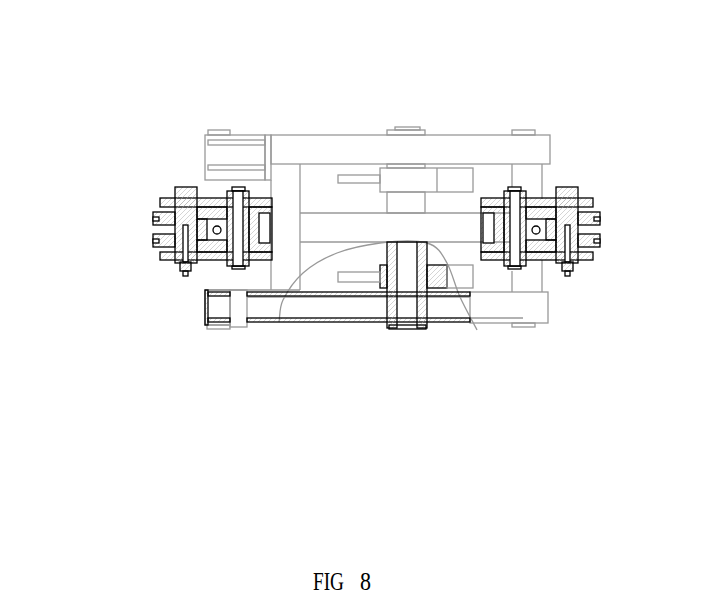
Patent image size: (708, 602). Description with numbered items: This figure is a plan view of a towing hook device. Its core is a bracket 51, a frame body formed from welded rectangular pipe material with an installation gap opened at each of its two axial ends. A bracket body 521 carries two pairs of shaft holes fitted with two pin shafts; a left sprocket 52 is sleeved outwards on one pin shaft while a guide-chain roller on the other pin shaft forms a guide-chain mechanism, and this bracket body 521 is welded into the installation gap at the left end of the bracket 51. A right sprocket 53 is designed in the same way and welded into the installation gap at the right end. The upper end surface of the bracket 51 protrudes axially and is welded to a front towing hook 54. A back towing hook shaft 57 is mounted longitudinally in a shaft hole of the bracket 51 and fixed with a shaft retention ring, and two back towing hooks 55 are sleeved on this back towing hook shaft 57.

The bracket 51 is at (305, 140).
The left sprocket 52 is at (163, 245).
The bracket body 521 is at (215, 257).
The right sprocket 53 is at (573, 190).
The front towing hook 54 is at (266, 138).
The back towing hook 55 is at (452, 178).
The back towing hook shaft 57 is at (405, 287).